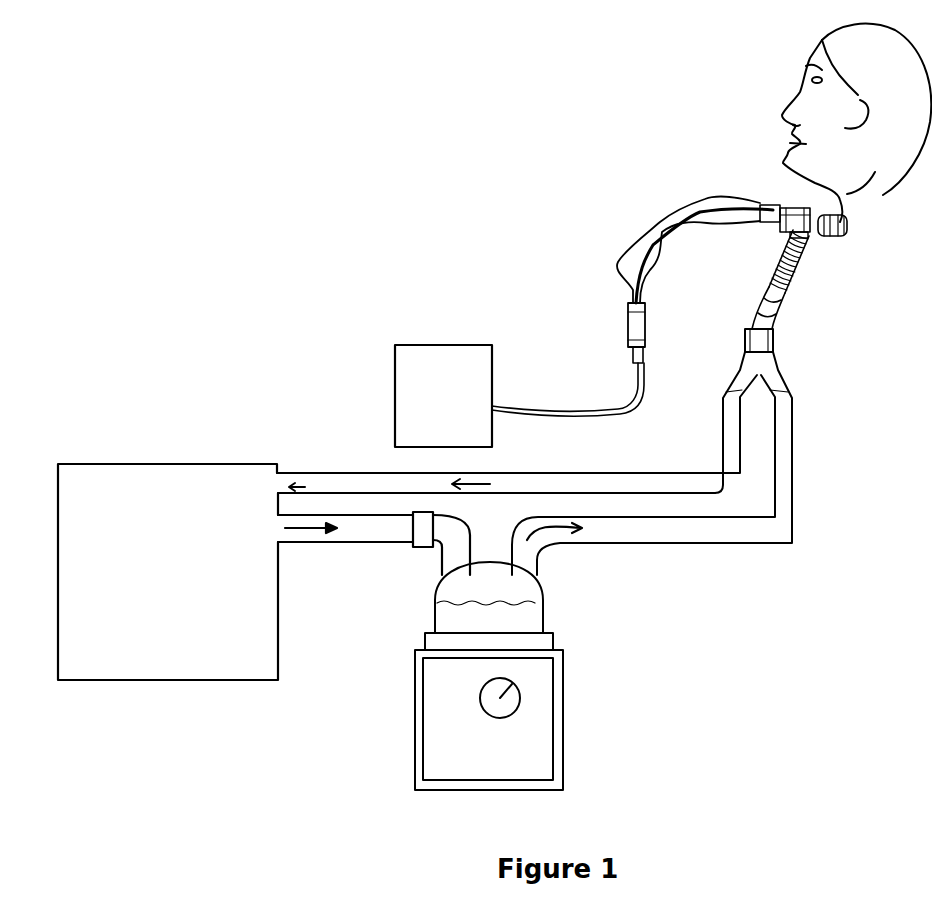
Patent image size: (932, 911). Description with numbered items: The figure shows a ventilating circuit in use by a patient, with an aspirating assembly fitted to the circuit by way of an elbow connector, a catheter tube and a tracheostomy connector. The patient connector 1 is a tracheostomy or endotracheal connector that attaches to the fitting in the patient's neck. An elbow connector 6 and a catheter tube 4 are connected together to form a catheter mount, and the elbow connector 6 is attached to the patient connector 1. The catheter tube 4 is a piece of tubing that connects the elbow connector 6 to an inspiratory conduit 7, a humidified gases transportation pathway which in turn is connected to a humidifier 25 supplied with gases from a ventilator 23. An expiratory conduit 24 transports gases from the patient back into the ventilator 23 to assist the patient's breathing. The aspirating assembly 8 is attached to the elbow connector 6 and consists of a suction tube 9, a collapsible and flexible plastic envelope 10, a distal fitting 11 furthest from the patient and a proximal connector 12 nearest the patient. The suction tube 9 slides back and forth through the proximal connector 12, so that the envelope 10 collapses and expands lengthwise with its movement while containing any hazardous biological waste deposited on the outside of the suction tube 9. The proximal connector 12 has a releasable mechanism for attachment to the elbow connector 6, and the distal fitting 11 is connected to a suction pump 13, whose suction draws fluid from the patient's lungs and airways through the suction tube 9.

The patient connector 1 is at (827, 238).
The catheter tube 4 is at (797, 270).
The elbow connector 6 is at (787, 224).
The inspiratory conduit 7 is at (797, 503).
The aspirating assembly 8 is at (653, 193).
The suction tube 9 is at (648, 245).
The plastic envelope 10 is at (618, 267).
The distal fitting 11 is at (628, 363).
The proximal connector 12 is at (795, 212).
The suction pump 13 is at (410, 335).
The ventilator 23 is at (215, 685).
The expiratory conduit 24 is at (587, 463).
The humidifier 25 is at (570, 717).